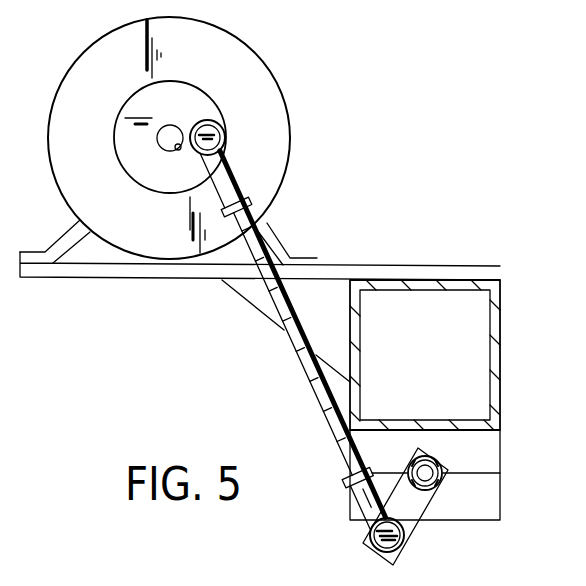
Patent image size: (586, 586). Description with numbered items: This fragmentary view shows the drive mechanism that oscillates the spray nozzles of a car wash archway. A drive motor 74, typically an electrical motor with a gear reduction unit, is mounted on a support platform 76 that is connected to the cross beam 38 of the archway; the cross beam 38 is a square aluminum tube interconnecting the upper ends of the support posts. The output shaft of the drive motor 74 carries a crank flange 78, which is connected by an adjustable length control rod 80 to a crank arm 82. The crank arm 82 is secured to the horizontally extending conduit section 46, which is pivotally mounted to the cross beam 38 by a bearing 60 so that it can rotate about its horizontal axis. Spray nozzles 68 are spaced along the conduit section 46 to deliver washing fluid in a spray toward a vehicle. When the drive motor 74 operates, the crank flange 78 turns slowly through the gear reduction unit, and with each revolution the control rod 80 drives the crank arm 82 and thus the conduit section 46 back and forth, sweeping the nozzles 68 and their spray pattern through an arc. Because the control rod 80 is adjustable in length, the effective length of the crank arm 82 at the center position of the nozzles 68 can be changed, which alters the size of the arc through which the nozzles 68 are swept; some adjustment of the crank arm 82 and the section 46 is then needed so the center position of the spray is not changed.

The drive motor 74 is at (248, 70).
The crank flange 78 is at (143, 107).
The support platform 76 is at (367, 264).
The cross beam 38 is at (522, 342).
The adjustable length control rod 80 is at (309, 379).
The horizontal conduit section 46 is at (435, 456).
The spray nozzles 68 is at (440, 484).
The bearing 60 is at (500, 455).
The crank arm 82 is at (410, 510).